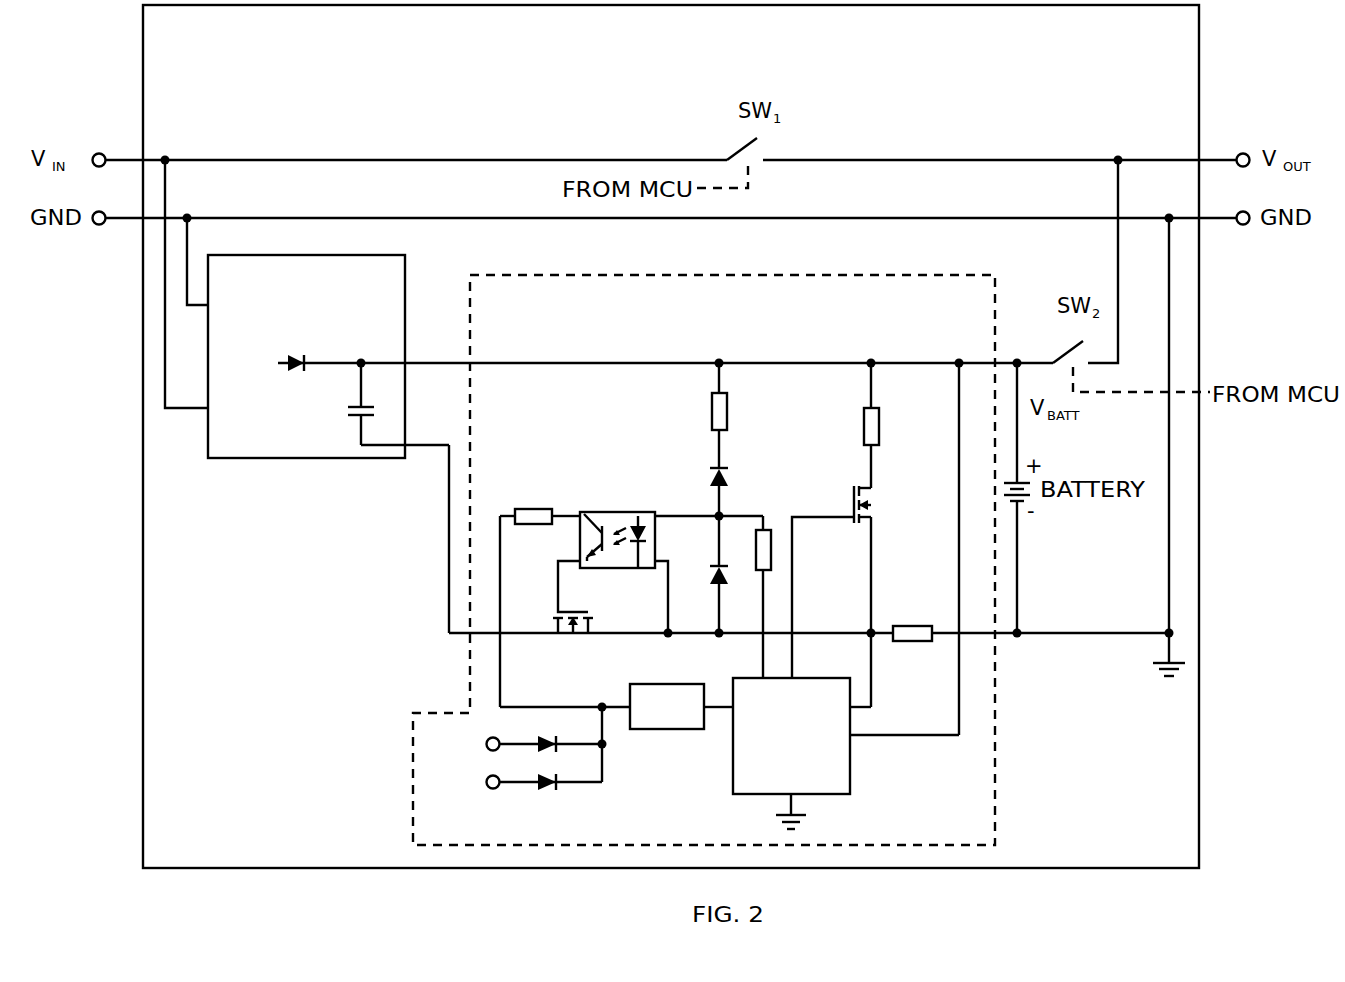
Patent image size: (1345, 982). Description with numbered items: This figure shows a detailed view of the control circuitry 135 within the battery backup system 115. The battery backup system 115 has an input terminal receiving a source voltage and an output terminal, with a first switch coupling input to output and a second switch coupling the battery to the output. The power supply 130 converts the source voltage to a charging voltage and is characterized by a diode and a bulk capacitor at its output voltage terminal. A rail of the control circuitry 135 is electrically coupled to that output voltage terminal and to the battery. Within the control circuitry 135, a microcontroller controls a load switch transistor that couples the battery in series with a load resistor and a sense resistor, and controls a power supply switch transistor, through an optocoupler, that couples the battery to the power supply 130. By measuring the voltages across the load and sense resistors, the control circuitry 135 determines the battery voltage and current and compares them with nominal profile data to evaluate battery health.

The battery backup system 115 is at (688, 73).
The power supply 130 is at (322, 310).
The control circuitry 135 is at (743, 339).